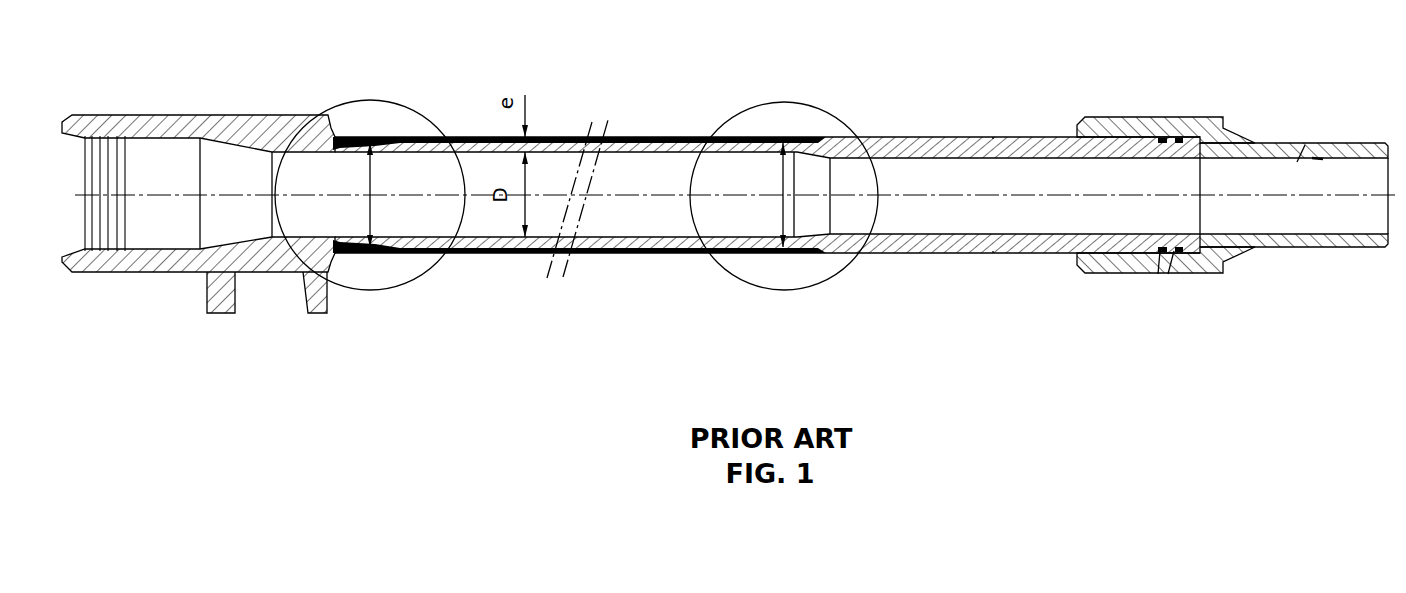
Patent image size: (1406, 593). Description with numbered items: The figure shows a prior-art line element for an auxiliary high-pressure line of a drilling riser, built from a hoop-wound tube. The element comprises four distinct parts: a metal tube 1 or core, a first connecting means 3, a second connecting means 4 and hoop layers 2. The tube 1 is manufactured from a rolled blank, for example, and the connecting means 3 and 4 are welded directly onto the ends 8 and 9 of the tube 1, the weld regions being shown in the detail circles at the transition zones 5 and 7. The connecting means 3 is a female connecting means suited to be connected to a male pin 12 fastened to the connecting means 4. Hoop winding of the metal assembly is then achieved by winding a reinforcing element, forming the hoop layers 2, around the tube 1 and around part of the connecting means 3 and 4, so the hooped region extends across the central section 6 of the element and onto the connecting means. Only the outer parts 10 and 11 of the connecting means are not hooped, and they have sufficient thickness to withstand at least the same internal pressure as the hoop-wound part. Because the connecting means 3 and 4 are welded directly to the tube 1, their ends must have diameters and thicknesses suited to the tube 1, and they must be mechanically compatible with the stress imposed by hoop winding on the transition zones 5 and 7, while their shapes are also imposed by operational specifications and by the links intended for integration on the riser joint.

The metal tube 1 is at (603, 246).
The hoop layers 2 is at (639, 254).
The first connecting means 3 is at (226, 290).
The second connecting means 4 is at (968, 246).
The transition zone 5 is at (403, 283).
The central section 6 is at (442, 80).
The transition zone 7 is at (815, 288).
The end of tube 8 is at (372, 214).
The end of tube 9 is at (782, 213).
The outer part of connecting means 10 is at (323, 80).
The outer part of connecting means 11 is at (1223, 80).
The male pin 12 is at (1204, 267).